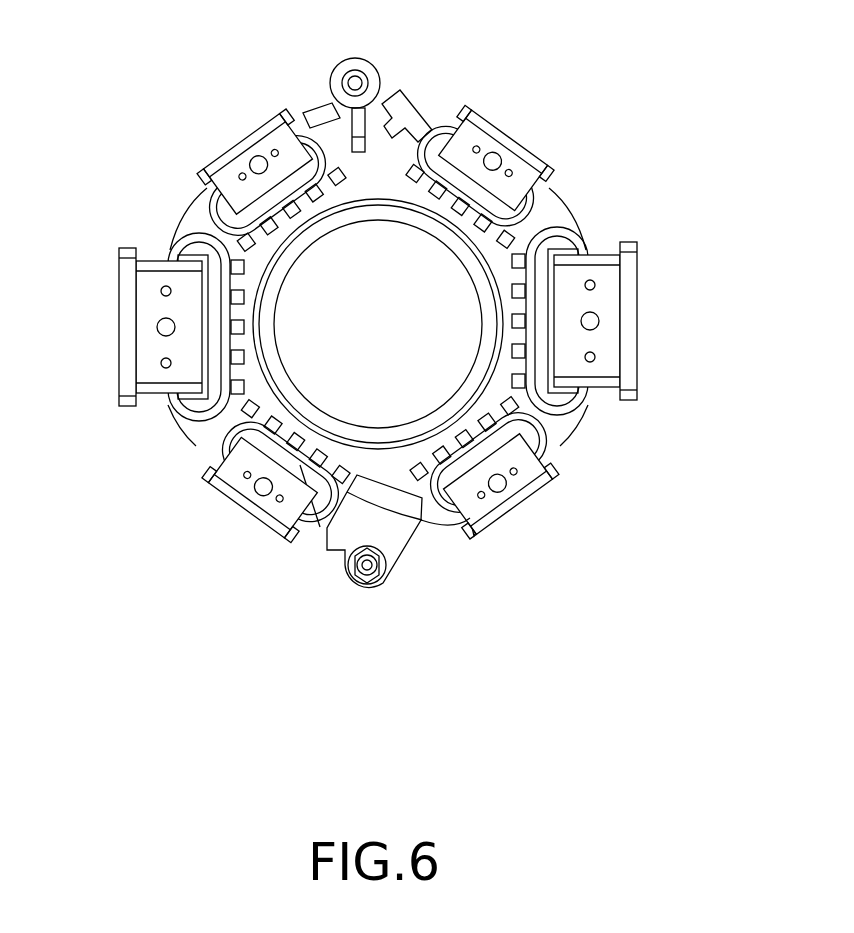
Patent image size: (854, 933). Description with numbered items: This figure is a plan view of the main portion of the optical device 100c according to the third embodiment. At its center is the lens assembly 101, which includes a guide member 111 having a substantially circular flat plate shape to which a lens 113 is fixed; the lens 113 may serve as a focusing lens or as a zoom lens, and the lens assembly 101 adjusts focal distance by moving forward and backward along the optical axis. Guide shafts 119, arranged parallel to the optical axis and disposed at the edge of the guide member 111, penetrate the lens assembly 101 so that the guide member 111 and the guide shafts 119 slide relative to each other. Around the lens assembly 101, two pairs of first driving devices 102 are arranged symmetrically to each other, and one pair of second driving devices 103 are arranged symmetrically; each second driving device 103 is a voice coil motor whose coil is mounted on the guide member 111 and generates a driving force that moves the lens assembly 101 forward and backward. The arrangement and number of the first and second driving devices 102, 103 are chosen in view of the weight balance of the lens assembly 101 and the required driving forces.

The optical device 100c is at (640, 82).
The lens assembly 101 is at (390, 616).
The first driving device 102 is at (100, 322).
The second driving device 103 is at (226, 128).
The guide member 111 is at (397, 530).
The lens 113 is at (435, 298).
The guide shaft 119 is at (350, 80).